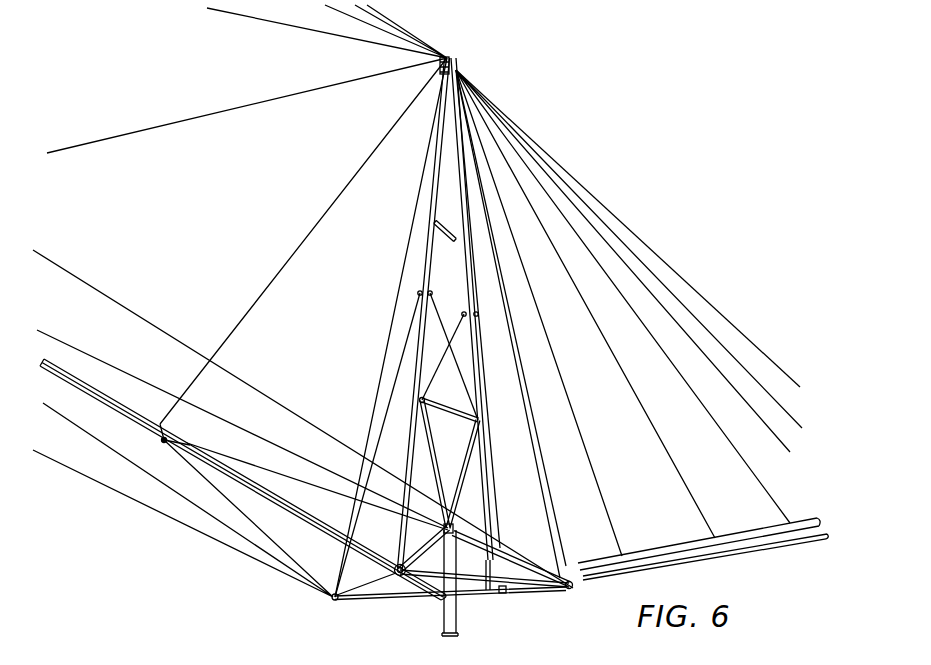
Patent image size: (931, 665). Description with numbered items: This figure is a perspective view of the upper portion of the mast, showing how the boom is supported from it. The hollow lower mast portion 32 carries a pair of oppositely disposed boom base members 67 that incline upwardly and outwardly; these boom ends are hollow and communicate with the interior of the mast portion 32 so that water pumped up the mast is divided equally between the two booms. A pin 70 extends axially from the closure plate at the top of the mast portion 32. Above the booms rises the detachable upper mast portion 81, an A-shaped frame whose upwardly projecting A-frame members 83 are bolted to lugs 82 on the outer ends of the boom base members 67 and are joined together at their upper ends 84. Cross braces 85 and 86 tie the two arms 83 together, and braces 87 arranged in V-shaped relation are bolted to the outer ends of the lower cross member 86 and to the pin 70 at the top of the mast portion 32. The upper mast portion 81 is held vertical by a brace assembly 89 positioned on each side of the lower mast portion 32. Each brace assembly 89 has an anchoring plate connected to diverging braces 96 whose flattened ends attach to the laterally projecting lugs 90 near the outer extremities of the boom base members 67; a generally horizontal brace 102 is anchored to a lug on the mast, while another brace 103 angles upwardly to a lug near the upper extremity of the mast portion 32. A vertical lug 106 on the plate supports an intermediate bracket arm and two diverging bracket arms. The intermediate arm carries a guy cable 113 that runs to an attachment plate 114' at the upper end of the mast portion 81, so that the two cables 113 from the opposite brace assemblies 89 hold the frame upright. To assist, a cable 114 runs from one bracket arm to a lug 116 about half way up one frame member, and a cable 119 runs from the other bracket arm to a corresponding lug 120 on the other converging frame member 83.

The upper ends of A-frame members 84 is at (452, 56).
The attachment plate 114' is at (628, 218).
The upper mast portion 81 is at (414, 269).
The cross brace 85 is at (450, 226).
The lug 116 is at (433, 294).
The guy cable 113 is at (393, 310).
The lug 120 is at (478, 306).
The A-frame members 83 is at (478, 355).
The cable 119 is at (505, 385).
The lower cross member 86 is at (452, 402).
The braces 87 is at (465, 460).
The cable 114 is at (512, 309).
The pin 70 is at (453, 526).
The brace 103 is at (499, 523).
The brace assembly 89 is at (392, 609).
The boom base members 67 is at (421, 586).
The lugs 82 is at (450, 619).
The laterally projecting lugs 90 is at (243, 512).
The vertical lug 106 is at (703, 591).
The mast portion 32 is at (443, 623).
The diverging braces 96 is at (472, 580).
The brace 102 is at (505, 593).